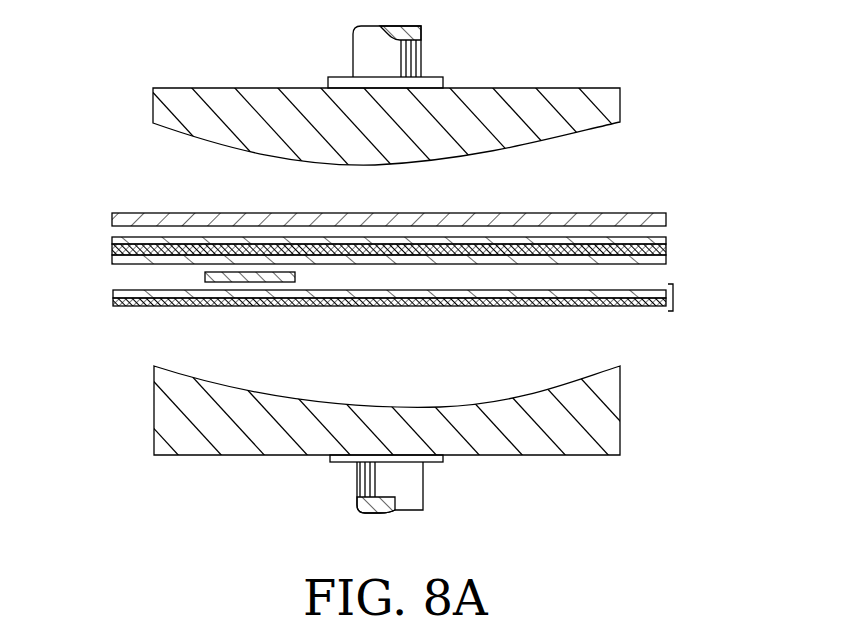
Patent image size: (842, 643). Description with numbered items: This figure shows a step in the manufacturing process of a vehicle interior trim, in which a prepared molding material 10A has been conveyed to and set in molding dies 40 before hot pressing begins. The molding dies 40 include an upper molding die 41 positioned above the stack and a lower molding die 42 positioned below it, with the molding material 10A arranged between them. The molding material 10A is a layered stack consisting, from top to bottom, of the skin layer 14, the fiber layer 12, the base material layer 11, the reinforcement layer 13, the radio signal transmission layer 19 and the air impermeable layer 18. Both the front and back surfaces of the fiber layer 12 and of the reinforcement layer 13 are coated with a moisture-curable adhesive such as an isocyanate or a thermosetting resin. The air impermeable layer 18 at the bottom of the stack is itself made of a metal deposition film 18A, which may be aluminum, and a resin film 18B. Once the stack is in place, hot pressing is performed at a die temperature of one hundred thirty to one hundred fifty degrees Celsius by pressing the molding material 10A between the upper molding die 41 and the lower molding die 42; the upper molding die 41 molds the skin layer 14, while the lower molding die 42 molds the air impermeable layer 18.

The molding material 10A is at (414, 261).
The base material layer 11 is at (666, 250).
The fiber layer 12 is at (666, 239).
The reinforcement layer 13 is at (666, 262).
The skin layer 14 is at (666, 215).
The air impermeable layer 18 is at (379, 308).
The metal deposition film 18A is at (113, 303).
The resin film 18B is at (113, 291).
The radio signal transmission layer 19 is at (205, 272).
The molding dies 40 is at (492, 60).
The upper molding die 41 is at (181, 88).
The lower molding die 42 is at (177, 432).